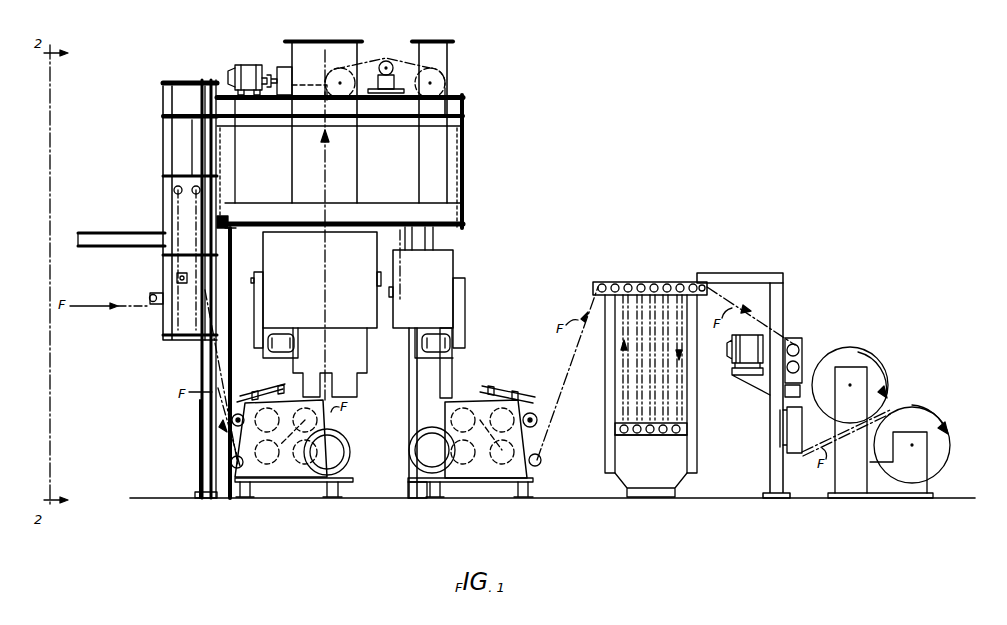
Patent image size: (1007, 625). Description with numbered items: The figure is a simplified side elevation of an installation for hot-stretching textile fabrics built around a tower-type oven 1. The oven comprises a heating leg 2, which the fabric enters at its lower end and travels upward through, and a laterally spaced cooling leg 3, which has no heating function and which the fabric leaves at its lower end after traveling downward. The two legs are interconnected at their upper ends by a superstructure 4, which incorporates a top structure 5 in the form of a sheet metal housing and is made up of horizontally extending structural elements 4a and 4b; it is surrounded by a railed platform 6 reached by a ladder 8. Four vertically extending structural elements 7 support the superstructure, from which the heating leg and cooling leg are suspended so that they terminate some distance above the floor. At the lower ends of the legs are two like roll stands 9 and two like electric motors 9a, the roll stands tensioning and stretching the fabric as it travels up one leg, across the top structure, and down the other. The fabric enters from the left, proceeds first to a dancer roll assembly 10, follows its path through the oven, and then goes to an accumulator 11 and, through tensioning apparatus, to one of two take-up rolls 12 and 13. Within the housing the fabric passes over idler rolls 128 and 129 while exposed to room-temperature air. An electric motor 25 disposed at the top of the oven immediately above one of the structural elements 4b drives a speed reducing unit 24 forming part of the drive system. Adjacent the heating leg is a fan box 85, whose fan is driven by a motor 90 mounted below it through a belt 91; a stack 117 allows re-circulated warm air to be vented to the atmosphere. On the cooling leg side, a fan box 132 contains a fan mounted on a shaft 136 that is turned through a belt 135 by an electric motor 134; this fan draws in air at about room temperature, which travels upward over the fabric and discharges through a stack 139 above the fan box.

The oven 1 is at (366, 52).
The heating leg 2 is at (284, 380).
The cooling leg 3 is at (462, 373).
The superstructure 4 is at (217, 95).
The horizontally extending structural element 4a is at (228, 214).
The horizontally extending structural element 4b is at (229, 116).
The top structure 5 is at (390, 50).
The railed platform 6 is at (222, 168).
The vertically extending structural element 7 is at (229, 360).
The ladder 8 is at (201, 422).
The roll stand 9 is at (340, 416).
The electric motor 9a is at (350, 442).
The dancer roll assembly 10 is at (161, 74).
The accumulator 11 is at (651, 280).
The take-up roll 12 is at (950, 445).
The take-up roll 13 is at (857, 349).
The speed reducing unit 24 is at (281, 67).
The electric motor 25 is at (248, 65).
The fan box 85 is at (264, 262).
The motor 90 is at (276, 355).
The belt 91 is at (257, 308).
The stack 117 is at (322, 43).
The idler roll 128 is at (330, 66).
The idler roll 129 is at (444, 70).
The fan box 132 is at (455, 258).
The electric motor 134 is at (432, 355).
The belt 135 is at (462, 338).
The shaft 136 is at (466, 292).
The stack 139 is at (432, 40).